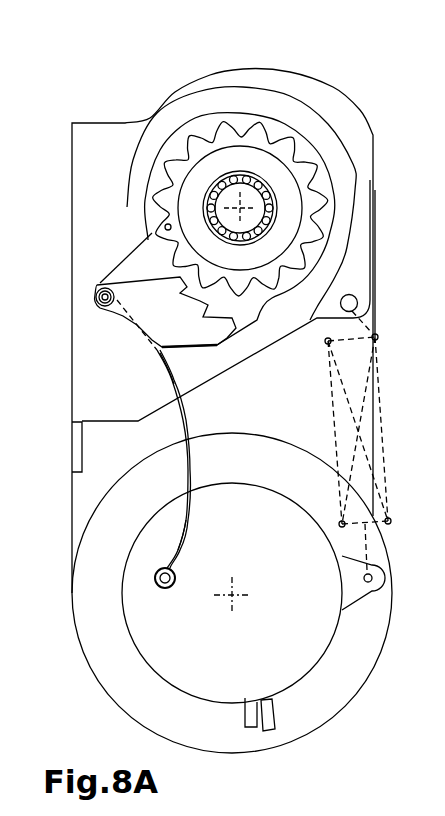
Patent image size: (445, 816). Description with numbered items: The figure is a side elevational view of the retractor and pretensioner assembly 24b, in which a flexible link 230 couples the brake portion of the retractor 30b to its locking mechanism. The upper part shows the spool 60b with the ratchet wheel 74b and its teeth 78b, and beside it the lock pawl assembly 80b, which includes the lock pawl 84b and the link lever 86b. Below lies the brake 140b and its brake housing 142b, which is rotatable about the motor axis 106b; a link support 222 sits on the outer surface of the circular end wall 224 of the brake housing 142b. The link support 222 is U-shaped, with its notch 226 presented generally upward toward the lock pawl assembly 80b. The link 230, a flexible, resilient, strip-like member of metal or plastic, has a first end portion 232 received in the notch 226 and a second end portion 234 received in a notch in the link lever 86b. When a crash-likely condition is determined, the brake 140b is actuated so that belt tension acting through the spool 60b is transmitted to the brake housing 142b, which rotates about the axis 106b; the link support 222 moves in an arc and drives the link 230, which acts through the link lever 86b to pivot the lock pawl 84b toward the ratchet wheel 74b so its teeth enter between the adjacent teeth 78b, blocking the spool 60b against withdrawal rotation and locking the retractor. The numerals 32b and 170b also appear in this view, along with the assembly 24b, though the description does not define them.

The retractor and pretensioner assembly 24b is at (103, 100).
The retractor 30b is at (112, 148).
The spool 60b is at (257, 103).
The ratchet wheel 74b is at (157, 169).
The teeth 78b is at (320, 226).
The lock pawl 84b is at (153, 293).
The lock pawl assembly 80b is at (88, 299).
The link lever 86b is at (123, 330).
The second end portion 234 is at (167, 382).
The link 230 is at (183, 480).
The first end portion 232 is at (164, 571).
The link support 222 is at (165, 588).
The notch 226 is at (175, 568).
The brake drum 32b is at (68, 588).
The brake housing 142b is at (132, 643).
The motor axis 106b is at (235, 598).
The circular end wall 224 is at (275, 673).
The brake 140b is at (215, 708).
The linkage 170b is at (333, 432).